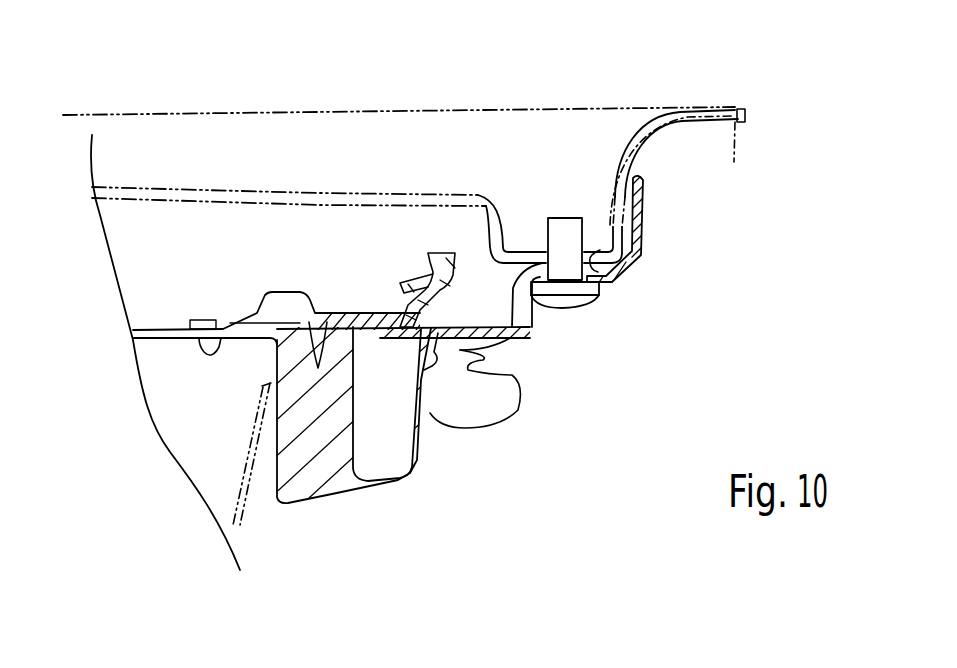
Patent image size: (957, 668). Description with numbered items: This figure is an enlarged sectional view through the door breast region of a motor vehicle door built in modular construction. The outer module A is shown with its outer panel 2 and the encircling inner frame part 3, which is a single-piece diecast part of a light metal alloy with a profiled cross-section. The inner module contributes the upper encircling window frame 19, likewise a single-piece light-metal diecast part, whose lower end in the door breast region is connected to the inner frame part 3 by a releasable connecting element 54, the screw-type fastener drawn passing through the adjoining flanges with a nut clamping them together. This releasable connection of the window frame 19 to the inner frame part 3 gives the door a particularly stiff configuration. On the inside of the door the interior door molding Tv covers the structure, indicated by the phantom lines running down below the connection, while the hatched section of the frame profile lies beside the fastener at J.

The outer panel 2 is at (262, 113).
The inner frame part 3 is at (345, 203).
The outer module A is at (636, 101).
The sheet metal bracket J is at (639, 262).
The releasable connecting element 54 is at (596, 300).
The upper encircling window frame 19 is at (413, 461).
The interior door molding Tv is at (243, 522).